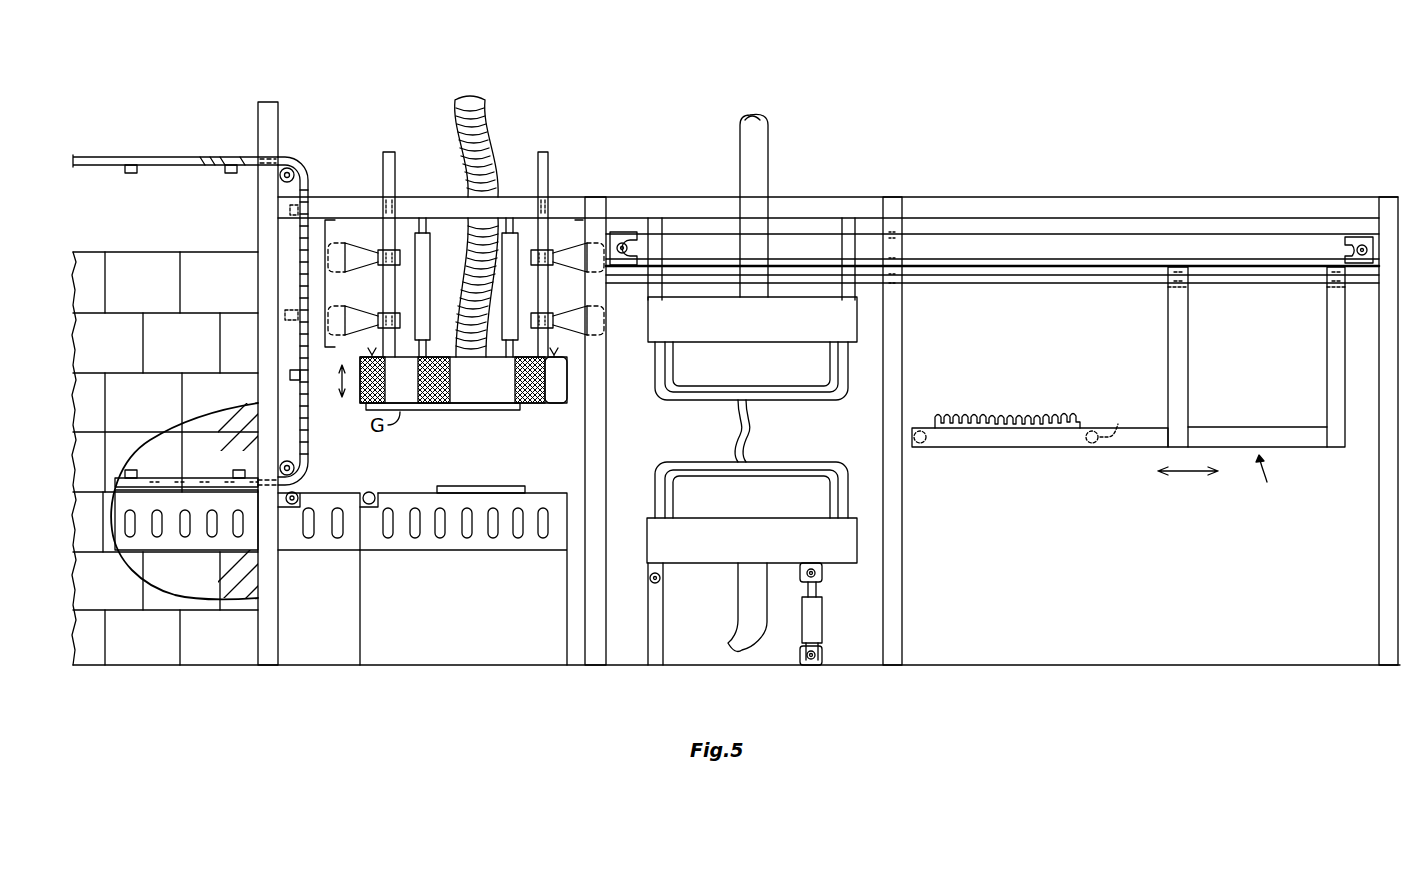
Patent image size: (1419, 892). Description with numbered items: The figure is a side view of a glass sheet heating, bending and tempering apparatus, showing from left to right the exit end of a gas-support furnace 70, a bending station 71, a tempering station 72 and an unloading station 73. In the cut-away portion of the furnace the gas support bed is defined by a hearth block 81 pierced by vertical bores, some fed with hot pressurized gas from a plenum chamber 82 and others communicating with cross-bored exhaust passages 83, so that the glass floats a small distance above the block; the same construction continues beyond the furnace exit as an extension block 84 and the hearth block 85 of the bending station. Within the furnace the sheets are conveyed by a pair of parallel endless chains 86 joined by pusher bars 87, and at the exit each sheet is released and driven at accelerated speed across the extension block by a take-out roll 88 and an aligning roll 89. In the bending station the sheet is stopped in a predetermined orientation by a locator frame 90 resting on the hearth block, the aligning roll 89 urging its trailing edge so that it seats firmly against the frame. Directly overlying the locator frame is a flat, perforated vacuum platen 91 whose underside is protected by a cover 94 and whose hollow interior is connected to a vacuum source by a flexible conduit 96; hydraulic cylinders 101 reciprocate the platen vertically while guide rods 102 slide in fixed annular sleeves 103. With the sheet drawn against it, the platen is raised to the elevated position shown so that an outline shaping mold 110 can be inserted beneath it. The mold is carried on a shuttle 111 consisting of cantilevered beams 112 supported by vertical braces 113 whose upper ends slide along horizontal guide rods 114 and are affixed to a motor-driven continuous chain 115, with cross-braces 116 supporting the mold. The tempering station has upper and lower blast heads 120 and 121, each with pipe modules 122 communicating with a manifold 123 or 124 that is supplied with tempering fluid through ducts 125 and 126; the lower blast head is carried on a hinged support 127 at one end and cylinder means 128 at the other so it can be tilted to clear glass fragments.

The glass sheet heating furnace 70 is at (158, 125).
The bending station 71 is at (428, 95).
The tempering station 72 is at (694, 125).
The unloading station 73 is at (1095, 150).
The hearth block 81 is at (218, 553).
The plenum chamber 82 is at (178, 576).
The exhaust passages 83 is at (337, 535).
The extension block 84 is at (312, 552).
The hearth block 85 is at (462, 552).
The endless chains 86 is at (204, 478).
The pusher bars 87 is at (133, 478).
The take-out roll 88 is at (296, 494).
The aligning roll 89 is at (369, 491).
The locator frame 90 is at (508, 486).
The vacuum platen 91 is at (535, 412).
The protective cover 94 is at (558, 400).
The flexible conduit 96 is at (486, 112).
The hydraulic cylinders 101 is at (502, 256).
The guide rods 102 is at (466, 311).
The annular sleeves 103 is at (466, 248).
The outline shaping mold 110 is at (1082, 421).
The shuttle 111 is at (1238, 477).
The cantilevered beams 112 is at (996, 447).
The vertical braces 113 is at (1327, 343).
The horizontal guide rods 114 is at (1004, 283).
The continuous chain 115 is at (1316, 232).
The cross-braces 116 is at (934, 470).
The upper blast head 120 is at (690, 406).
The lower blast head 121 is at (676, 456).
The pipe modules 122 is at (750, 424).
The manifold 123 is at (722, 342).
The manifold 124 is at (715, 518).
The duct 125 is at (770, 152).
The duct 126 is at (738, 607).
The hinged support 127 is at (661, 579).
The cylinder means 128 is at (810, 620).